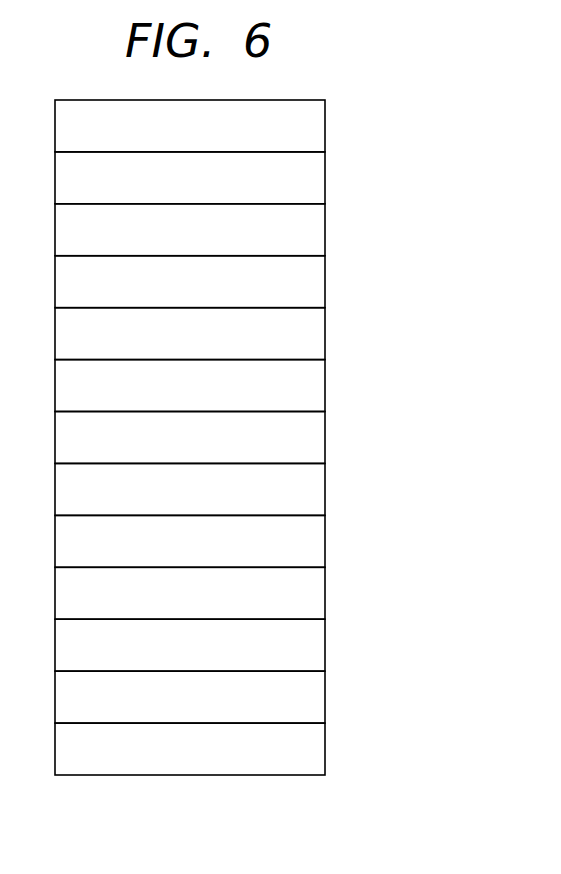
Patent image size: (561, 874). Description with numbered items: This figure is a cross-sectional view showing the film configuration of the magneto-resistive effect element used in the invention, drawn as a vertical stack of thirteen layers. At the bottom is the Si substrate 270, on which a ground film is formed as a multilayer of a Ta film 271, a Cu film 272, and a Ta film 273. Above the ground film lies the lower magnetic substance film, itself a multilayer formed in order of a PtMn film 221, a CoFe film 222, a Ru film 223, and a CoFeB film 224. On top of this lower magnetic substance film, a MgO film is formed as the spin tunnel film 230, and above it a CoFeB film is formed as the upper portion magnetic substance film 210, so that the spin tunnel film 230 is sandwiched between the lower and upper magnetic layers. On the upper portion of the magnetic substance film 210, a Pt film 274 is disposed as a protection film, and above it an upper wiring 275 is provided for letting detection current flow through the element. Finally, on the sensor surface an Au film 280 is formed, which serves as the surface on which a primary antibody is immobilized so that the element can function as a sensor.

The Au film 280 is at (310, 129).
The upper wiring 275 is at (310, 181).
The Pt film 274 is at (310, 233).
The upper portion magnetic substance film 210 is at (310, 285).
The spin tunnel film 230 is at (310, 337).
The CoFeB film 224 is at (310, 389).
The Ru film 223 is at (310, 441).
The CoFe film 222 is at (310, 493).
The PtMn film 221 is at (310, 545).
The Ta film 273 is at (310, 597).
The Cu film 272 is at (310, 649).
The Ta film 271 is at (310, 701).
The Si substrate 270 is at (310, 753).